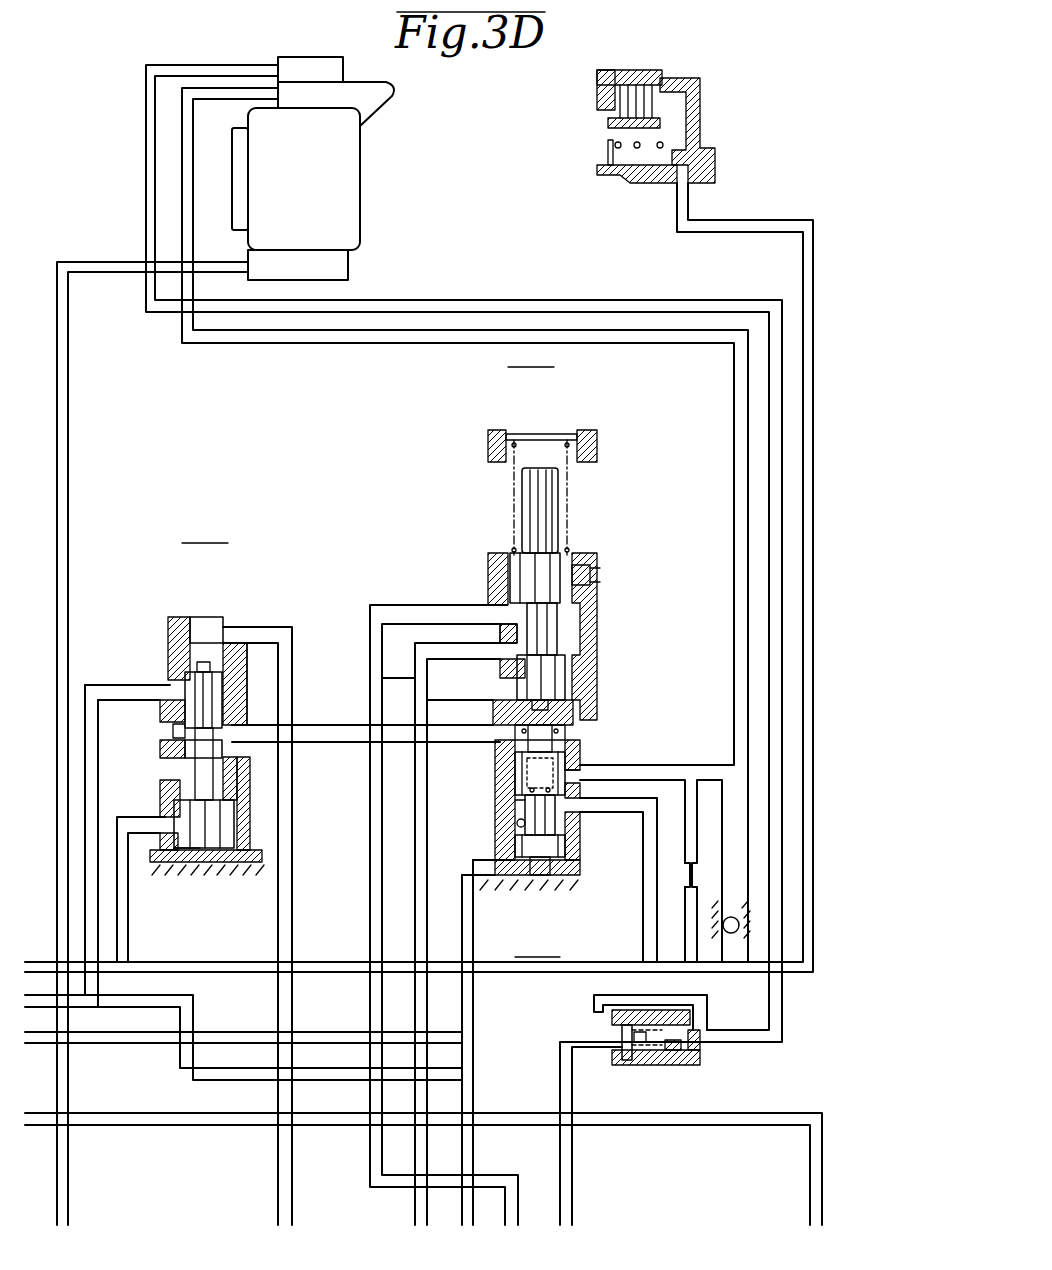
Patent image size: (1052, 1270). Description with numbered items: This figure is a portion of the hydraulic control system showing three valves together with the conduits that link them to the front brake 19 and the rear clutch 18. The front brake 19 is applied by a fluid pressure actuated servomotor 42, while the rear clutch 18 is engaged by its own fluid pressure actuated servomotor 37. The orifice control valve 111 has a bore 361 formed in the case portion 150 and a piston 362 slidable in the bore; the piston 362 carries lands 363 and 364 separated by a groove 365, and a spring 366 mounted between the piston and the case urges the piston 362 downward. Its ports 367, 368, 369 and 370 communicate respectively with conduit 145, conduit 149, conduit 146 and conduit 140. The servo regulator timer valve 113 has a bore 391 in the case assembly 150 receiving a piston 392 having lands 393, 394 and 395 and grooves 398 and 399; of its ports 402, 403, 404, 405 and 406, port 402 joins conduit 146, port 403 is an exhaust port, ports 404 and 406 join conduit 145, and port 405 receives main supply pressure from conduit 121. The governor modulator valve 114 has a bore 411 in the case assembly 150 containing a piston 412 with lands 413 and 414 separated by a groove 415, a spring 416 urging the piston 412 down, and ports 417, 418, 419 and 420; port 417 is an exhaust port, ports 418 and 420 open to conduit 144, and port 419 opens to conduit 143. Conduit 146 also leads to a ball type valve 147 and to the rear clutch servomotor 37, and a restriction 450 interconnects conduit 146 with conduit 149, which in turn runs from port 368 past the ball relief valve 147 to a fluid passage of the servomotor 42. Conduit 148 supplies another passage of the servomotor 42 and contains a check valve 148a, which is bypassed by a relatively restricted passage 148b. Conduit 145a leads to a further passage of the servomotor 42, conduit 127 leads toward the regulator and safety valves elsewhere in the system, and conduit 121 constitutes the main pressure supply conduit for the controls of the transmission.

The front brake 19 is at (268, 57).
The fluid pressure actuated servomotor 42 is at (370, 159).
The rear clutch 18 is at (758, 82).
The rear clutch servomotor 37 is at (655, 152).
The conduit 148 is at (146, 114).
The conduit 149 is at (184, 345).
The conduit 146 is at (200, 962).
The conduit 145a is at (60, 450).
The conduit 145 is at (278, 1190).
The conduit 127 is at (812, 1180).
The conduit 140 is at (157, 1045).
The conduit 121 is at (308, 1070).
The conduit 144 is at (370, 638).
The conduit 143 is at (415, 1202).
The servo regulator timer valve 113 is at (198, 698).
The governor modulator valve 114 is at (519, 532).
The orifice control valve 111 is at (531, 841).
The case assembly 150 is at (182, 620).
The port 406 is at (232, 634).
The bore 391 is at (182, 656).
The port 405 is at (165, 692).
The land 395 is at (215, 696).
The groove 399 is at (172, 734).
The land 394 is at (190, 755).
The port 404 is at (238, 746).
The exhaust port 403 is at (162, 768).
The groove 398 is at (228, 782).
The port 402 is at (160, 820).
The land 393 is at (176, 852).
The piston 392 is at (222, 852).
The spring 416 is at (580, 447).
The piston 412 is at (568, 514).
The bore 411 is at (527, 552).
The land 413 is at (515, 575).
The exhaust port 417 is at (592, 580).
The port 418 is at (500, 612).
The groove 415 is at (574, 640).
The port 419 is at (505, 648).
The land 414 is at (568, 668).
The port 420 is at (510, 690).
The spring 366 is at (556, 736).
The land 363 is at (566, 762).
The port 367 is at (500, 745).
The piston 362 is at (520, 800).
The groove 365 is at (525, 812).
The bore 361 is at (517, 823).
The port 368 is at (570, 775).
The port 369 is at (560, 800).
The land 364 is at (566, 842).
The port 370 is at (525, 866).
The restriction 450 is at (688, 878).
The ball type valve 147 is at (727, 933).
The restricted passage 148b is at (594, 1018).
The check valve 148a is at (636, 1060).